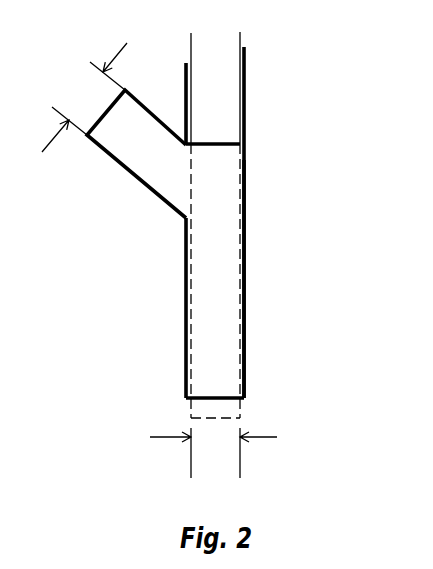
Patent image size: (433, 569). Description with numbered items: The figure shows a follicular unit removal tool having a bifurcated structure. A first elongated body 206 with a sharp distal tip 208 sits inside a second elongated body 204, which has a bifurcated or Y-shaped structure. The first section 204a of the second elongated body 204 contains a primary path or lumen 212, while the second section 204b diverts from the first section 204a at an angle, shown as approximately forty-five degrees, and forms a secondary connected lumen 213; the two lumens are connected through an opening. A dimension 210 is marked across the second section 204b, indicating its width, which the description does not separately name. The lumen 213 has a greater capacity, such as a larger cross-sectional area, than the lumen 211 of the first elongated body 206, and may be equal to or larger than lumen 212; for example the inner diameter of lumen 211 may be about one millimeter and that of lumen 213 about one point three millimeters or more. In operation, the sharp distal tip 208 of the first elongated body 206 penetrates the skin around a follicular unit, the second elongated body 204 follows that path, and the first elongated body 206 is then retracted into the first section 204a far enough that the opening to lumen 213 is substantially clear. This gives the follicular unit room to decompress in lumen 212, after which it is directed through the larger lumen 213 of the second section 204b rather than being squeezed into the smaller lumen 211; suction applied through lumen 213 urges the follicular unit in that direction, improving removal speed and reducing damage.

The second elongated body 204 is at (187, 176).
The first section of the bifurcated structure 204a is at (244, 355).
The second section of the second elongated body 204b is at (130, 173).
The first elongated body 206 is at (241, 37).
The sharp distal tip 208 is at (217, 145).
The width of branch 210 is at (84, 97).
The lumen of the first elongated body 211 is at (233, 70).
The lumen of the first section 212 is at (233, 373).
The lumen of the second section 213 is at (167, 163).